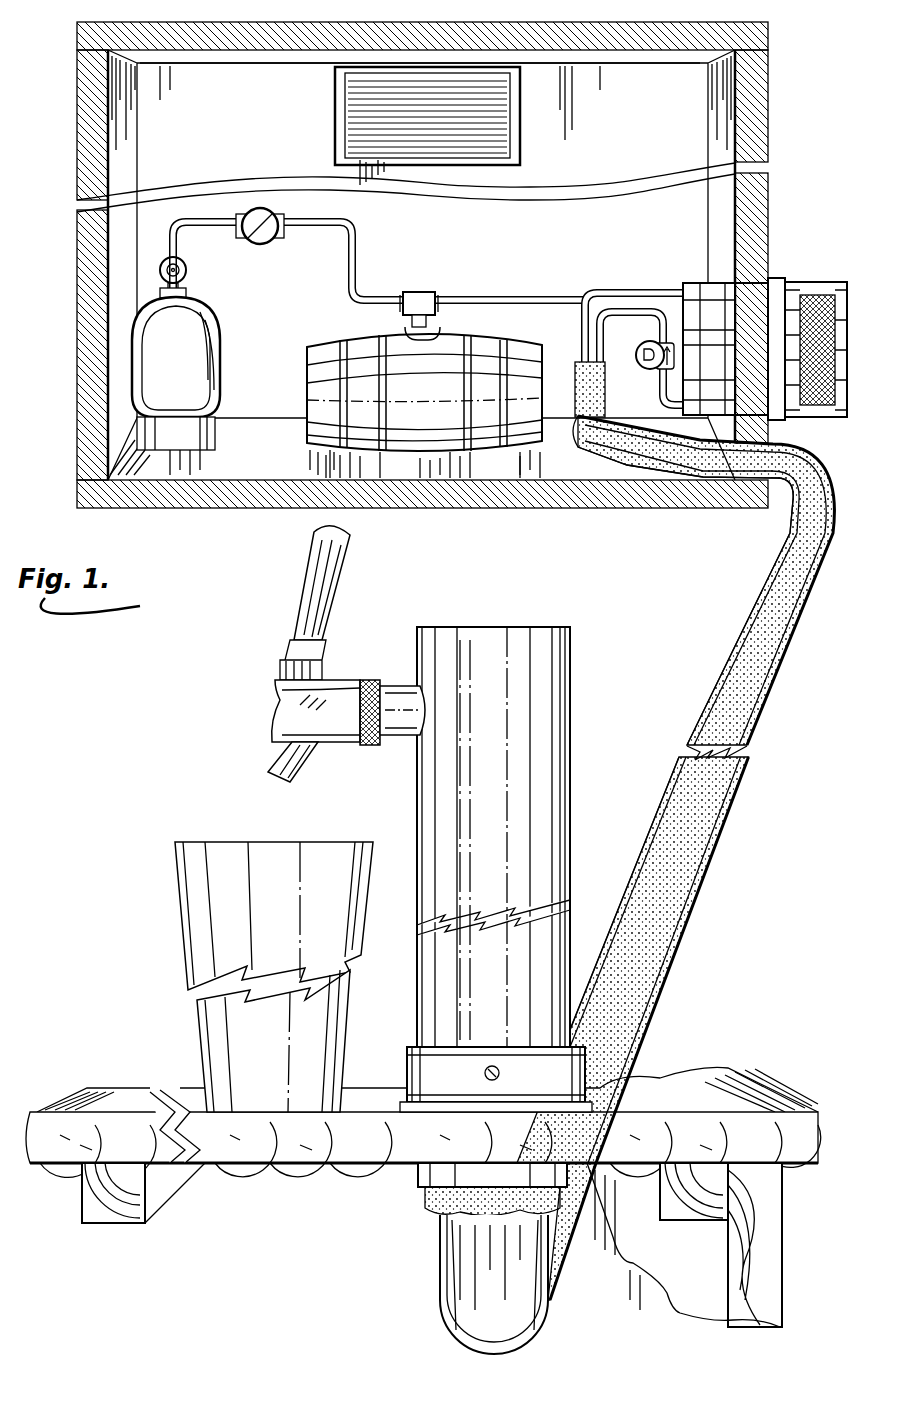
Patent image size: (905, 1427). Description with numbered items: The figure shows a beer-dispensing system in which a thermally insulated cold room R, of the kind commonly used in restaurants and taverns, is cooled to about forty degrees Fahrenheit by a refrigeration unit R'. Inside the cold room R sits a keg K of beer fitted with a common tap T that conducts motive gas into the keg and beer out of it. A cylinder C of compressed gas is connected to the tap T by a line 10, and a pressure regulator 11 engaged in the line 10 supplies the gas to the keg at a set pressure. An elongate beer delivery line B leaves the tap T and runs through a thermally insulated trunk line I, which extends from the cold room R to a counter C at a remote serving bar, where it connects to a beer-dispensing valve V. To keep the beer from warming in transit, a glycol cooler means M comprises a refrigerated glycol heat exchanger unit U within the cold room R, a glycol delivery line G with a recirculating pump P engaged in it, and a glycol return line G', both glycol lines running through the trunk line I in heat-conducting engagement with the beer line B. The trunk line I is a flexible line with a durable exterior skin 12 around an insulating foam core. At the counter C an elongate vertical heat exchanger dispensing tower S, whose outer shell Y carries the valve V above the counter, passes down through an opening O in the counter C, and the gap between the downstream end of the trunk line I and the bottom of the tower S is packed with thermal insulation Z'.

The cold room R is at (422, 265).
The refrigeration unit R' is at (381, 126).
The line 10 is at (205, 222).
The pressure regulator 11 is at (265, 207).
The cylinder of compressed gas / counter C is at (212, 325).
The keg K is at (320, 345).
The tap T is at (412, 288).
The beer delivery line B is at (462, 296).
The glycol delivery line G is at (609, 308).
The glycol return line G' is at (641, 319).
The recirculating pump P is at (647, 337).
The glycol cooler means M is at (693, 280).
The refrigerated glycol heat exchanger unit U is at (722, 306).
The trunk line I is at (765, 592).
The exterior skin 12 is at (673, 915).
The heat exchanger dispensing tower S is at (578, 698).
The outer shell Y is at (535, 756).
The beer-dispensing valve V is at (275, 710).
The opening O is at (412, 1132).
The thermal insulation Z' is at (454, 1284).